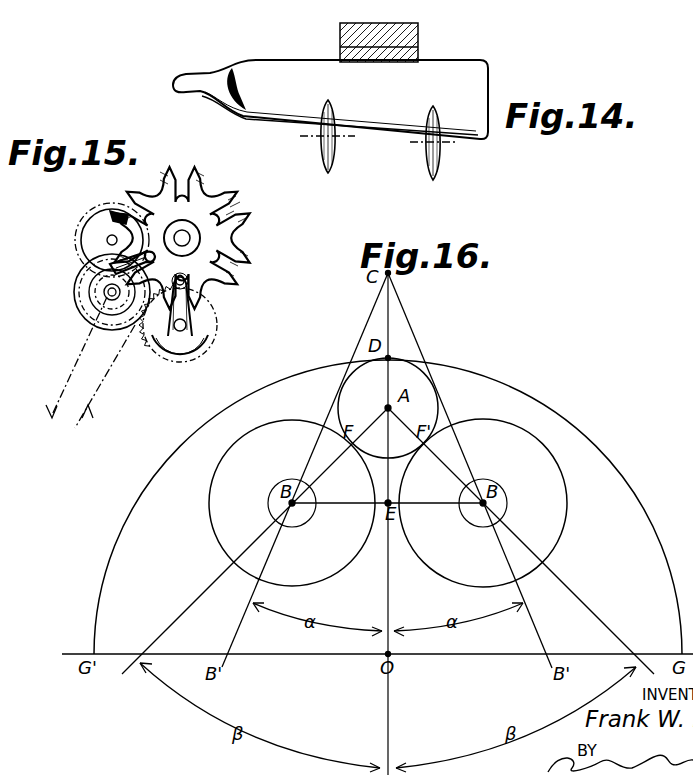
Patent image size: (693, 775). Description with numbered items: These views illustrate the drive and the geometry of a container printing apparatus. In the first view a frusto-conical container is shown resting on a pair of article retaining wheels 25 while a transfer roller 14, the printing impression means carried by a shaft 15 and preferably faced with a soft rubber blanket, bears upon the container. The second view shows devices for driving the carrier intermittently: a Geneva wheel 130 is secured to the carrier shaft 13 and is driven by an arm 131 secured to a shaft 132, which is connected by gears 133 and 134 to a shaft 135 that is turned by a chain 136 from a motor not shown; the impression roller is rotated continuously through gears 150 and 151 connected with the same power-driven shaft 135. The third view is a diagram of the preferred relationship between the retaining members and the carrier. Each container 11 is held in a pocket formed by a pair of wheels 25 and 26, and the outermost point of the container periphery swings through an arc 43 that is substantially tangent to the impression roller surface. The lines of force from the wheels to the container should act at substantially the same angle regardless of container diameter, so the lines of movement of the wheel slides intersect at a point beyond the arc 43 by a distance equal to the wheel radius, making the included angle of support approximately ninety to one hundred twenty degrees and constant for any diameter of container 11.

In FIG. 14, the transfer roller 14 is at (418, 50).
In FIG. 14, the article retaining wheel 25 is at (320, 151).
In FIG. 16, the article retaining wheel 25 is at (484, 420).
In FIG. 15, the shaft 13 is at (182, 238).
In FIG. 15, the Geneva wheel 130 is at (234, 236).
In FIG. 15, the shaft 15 is at (108, 238).
In FIG. 15, the gear 150 is at (78, 252).
In FIG. 15, the gear 151 is at (92, 286).
In FIG. 15, the shaft 135 is at (112, 292).
In FIG. 15, the gear 134 is at (78, 357).
In FIG. 15, the chain 136 is at (100, 376).
In FIG. 15, the gear 133 is at (173, 358).
In FIG. 15, the arm 131 is at (198, 322).
In FIG. 15, the shaft 132 is at (185, 330).
In FIG. 16, the container 11 is at (417, 373).
In FIG. 16, the arc 43 is at (515, 387).
In FIG. 16, the article retaining wheel 26 is at (277, 420).